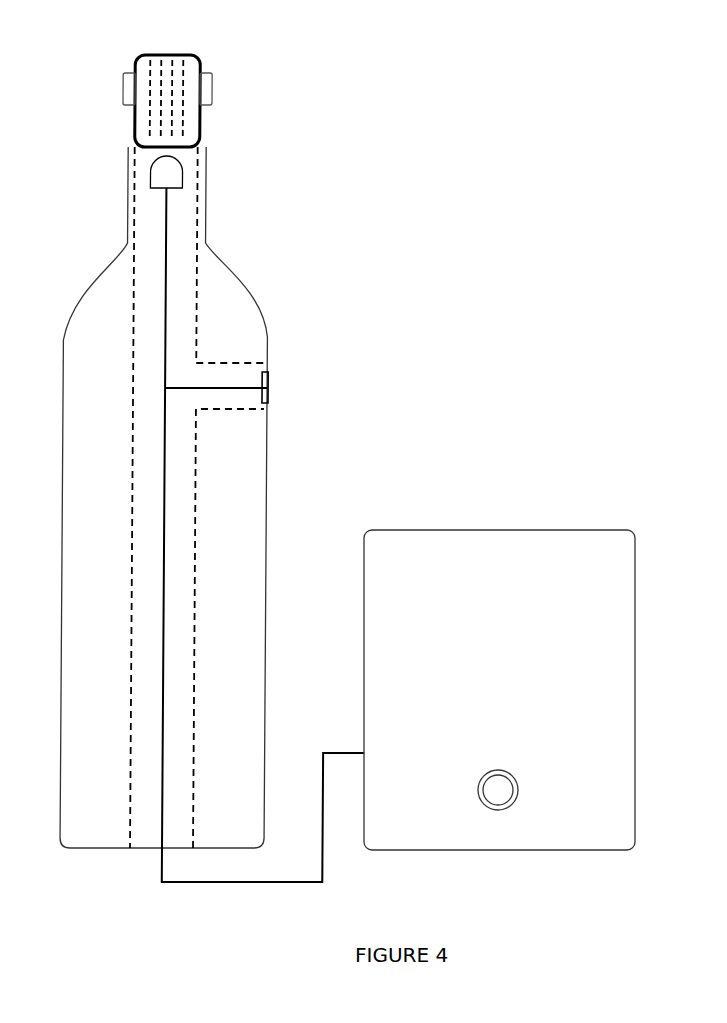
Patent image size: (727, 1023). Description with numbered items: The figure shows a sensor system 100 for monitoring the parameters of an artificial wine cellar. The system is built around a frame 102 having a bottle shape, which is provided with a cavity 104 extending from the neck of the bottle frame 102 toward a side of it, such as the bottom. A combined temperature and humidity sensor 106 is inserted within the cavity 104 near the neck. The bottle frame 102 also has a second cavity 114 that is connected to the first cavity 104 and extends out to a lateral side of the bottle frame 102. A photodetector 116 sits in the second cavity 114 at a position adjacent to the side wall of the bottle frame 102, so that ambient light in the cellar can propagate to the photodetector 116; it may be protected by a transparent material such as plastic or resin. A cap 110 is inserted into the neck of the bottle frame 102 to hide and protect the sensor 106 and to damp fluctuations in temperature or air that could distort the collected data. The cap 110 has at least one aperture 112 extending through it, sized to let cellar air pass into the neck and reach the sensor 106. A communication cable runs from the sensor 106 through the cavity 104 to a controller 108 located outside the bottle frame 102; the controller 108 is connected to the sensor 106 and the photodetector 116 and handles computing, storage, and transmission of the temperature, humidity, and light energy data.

The sensor system 100 is at (500, 195).
The bottle frame 102 is at (95, 315).
The cavity 104 is at (178, 283).
The combined temperature and humidity sensor 106 is at (168, 177).
The controller 108 is at (418, 550).
The cap 110 is at (192, 106).
The aperture 112 is at (167, 83).
The second cavity 114 is at (212, 377).
The photodetector 116 is at (268, 380).